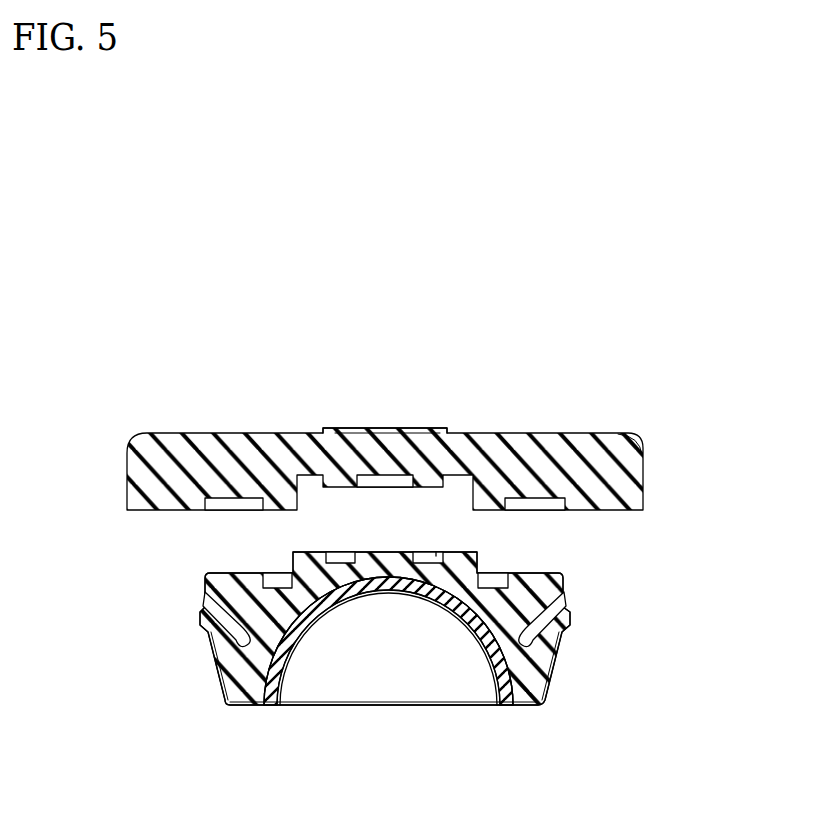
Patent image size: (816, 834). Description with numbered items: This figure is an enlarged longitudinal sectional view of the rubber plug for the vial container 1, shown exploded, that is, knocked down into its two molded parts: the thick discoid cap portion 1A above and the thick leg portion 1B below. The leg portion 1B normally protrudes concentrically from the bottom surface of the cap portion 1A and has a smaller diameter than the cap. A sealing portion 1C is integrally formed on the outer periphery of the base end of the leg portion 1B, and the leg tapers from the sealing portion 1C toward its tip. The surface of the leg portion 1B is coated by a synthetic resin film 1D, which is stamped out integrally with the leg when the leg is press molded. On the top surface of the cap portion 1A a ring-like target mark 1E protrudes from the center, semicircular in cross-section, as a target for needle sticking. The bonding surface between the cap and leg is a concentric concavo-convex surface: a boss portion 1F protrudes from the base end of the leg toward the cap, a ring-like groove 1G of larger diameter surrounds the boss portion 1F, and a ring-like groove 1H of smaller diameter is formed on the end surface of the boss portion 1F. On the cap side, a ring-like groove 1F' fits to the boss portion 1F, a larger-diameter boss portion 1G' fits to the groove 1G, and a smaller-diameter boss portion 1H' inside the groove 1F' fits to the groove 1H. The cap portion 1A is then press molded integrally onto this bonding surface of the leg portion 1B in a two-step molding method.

The rubber plug for the vial container 1 is at (257, 402).
The discoid cap portion 1A is at (643, 477).
The leg portion 1B is at (377, 706).
The sealing portion 1C is at (200, 616).
The synthetic resin film 1D is at (553, 667).
The ring-like target mark 1E is at (380, 428).
The boss portion 1F is at (226, 560).
The ring-like groove having a larger diameter 1G is at (538, 579).
The ring-like groove having a smaller diameter 1H is at (549, 544).
The ring-like groove 1F' is at (255, 418).
The boss portion having a larger diameter 1G' is at (517, 421).
The boss portion having a smaller diameter 1H' is at (400, 413).